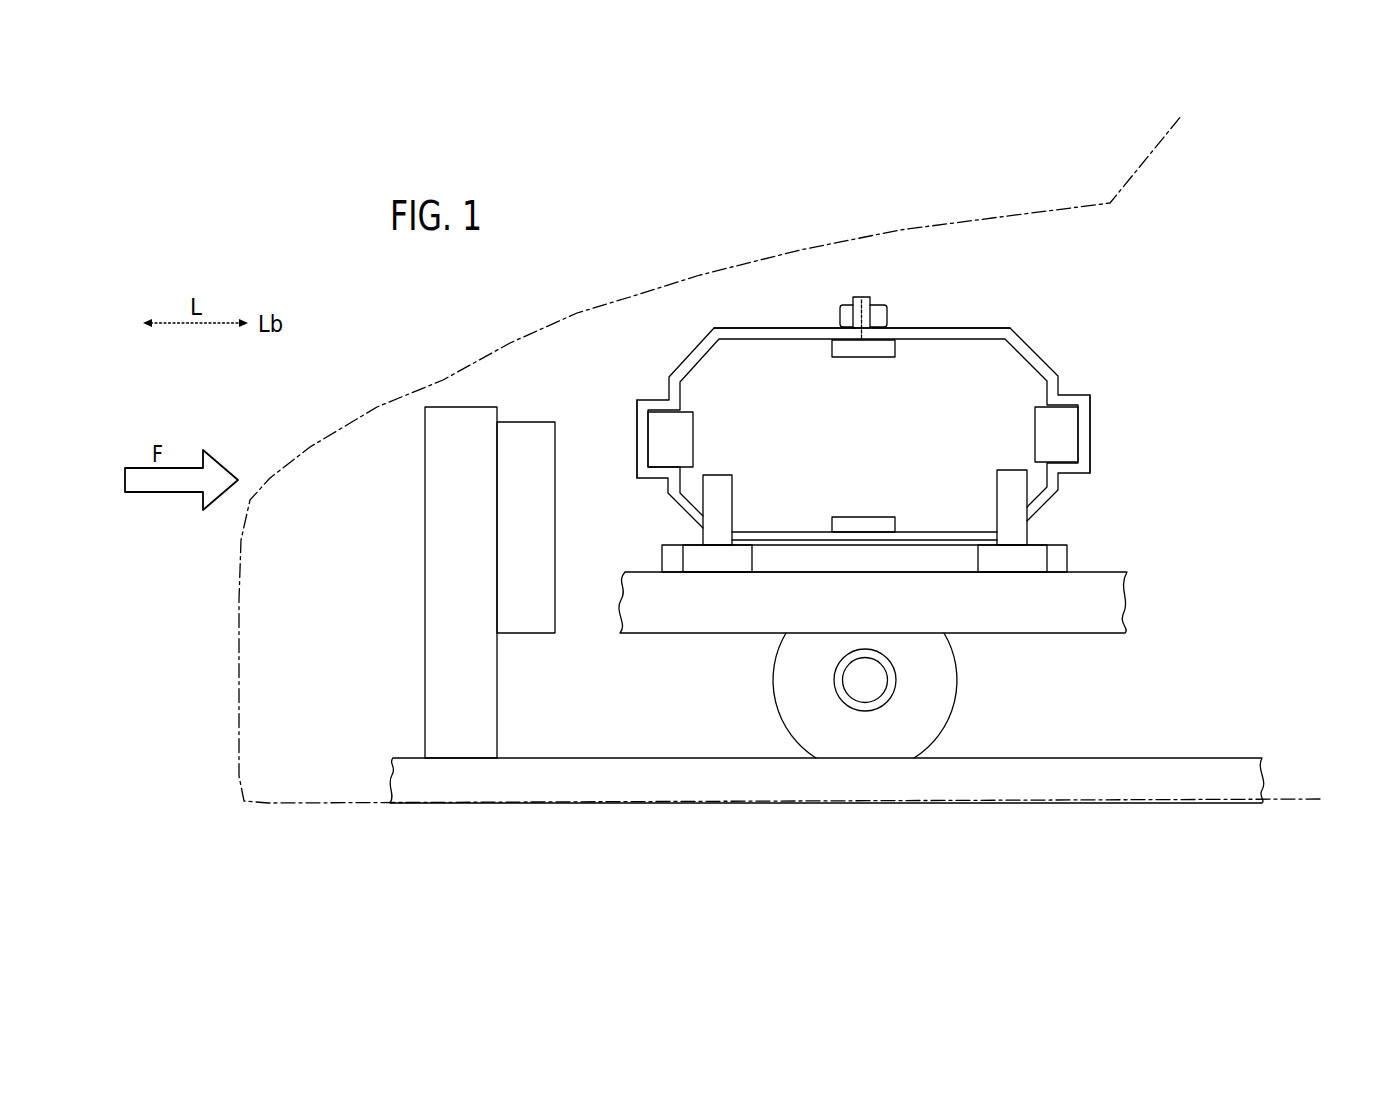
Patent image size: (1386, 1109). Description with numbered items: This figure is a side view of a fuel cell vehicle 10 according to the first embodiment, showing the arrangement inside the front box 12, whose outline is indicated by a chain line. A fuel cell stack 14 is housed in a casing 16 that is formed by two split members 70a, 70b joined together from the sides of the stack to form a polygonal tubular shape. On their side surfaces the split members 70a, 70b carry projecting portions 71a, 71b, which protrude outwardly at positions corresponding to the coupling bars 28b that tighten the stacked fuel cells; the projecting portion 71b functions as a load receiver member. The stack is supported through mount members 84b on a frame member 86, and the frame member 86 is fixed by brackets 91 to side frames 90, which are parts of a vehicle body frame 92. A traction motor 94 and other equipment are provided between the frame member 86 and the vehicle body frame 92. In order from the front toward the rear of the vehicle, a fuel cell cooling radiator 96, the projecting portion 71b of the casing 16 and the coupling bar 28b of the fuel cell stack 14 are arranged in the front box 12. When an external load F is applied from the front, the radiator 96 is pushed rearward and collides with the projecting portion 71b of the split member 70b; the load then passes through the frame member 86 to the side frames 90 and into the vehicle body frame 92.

The fuel cell vehicle 10 is at (460, 303).
The front box 12 is at (880, 250).
The fuel cell stack 14 is at (987, 360).
The casing 16 is at (815, 327).
The split member 70a is at (942, 327).
The split member 70b is at (780, 327).
The projecting portion 71a is at (1093, 432).
The projecting portion 71b is at (633, 440).
The coupling bar 28b is at (685, 430).
The mount member 84b is at (717, 492).
The frame member 86 is at (915, 560).
The side frame 90 is at (1092, 620).
The bracket 91 is at (713, 563).
The vehicle body frame 92 is at (613, 773).
The traction motor 94 is at (945, 682).
The fuel cell cooling radiator 96 is at (437, 543).